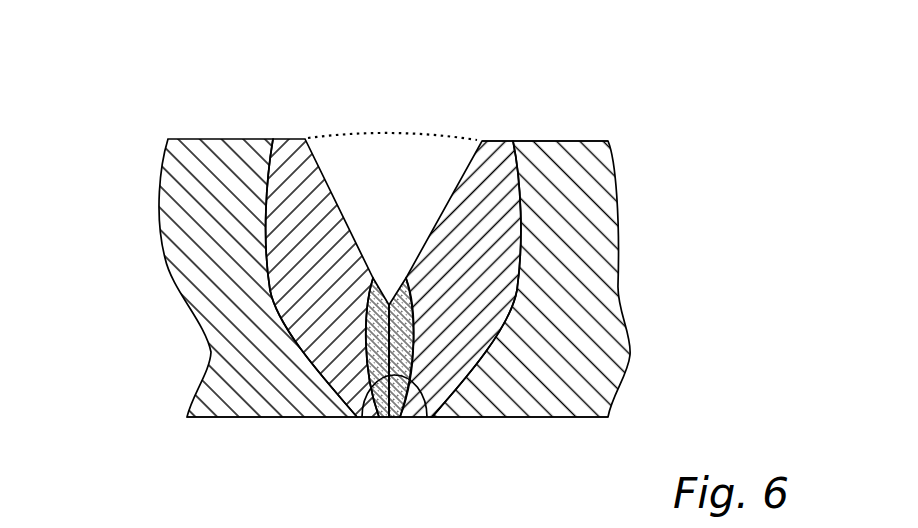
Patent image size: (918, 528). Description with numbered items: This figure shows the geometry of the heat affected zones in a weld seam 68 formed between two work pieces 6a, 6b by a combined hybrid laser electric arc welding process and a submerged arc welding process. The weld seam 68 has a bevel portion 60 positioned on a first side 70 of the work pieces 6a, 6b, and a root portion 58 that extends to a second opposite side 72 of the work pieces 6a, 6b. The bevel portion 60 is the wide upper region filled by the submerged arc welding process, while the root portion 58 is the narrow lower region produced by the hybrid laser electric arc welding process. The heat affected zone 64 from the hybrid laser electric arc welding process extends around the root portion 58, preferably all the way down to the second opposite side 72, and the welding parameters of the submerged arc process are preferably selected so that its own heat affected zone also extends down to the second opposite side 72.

The work piece 6a is at (190, 276).
The work piece 6b is at (605, 276).
The root portion 58 is at (360, 417).
The bevel portion 60 is at (337, 191).
The heat affected zone 64 is at (427, 417).
The weld seam 68 is at (420, 131).
The first side 70 is at (563, 141).
The second opposite side 72 is at (530, 418).